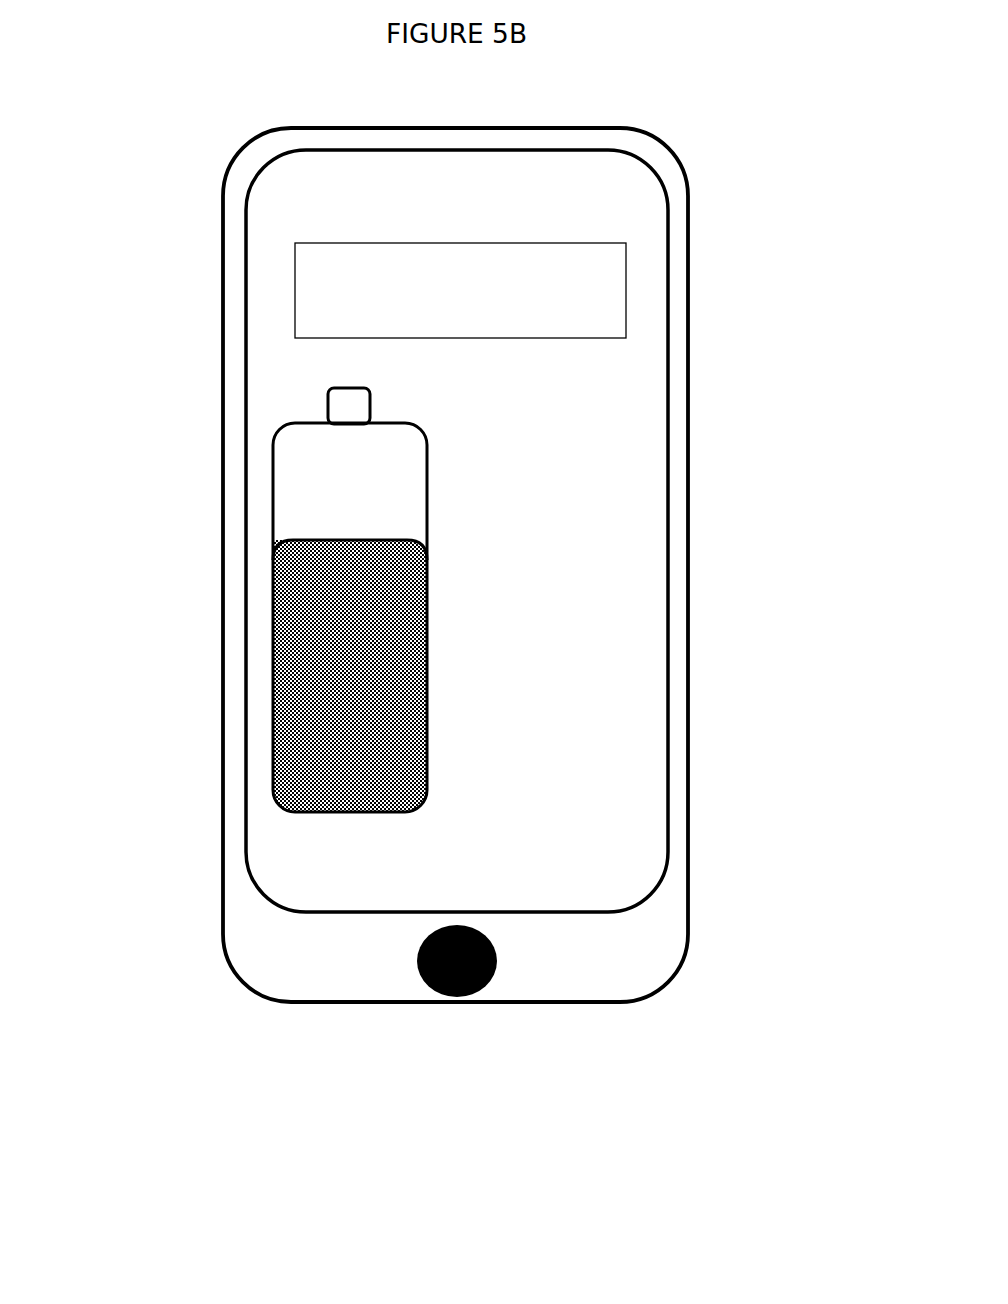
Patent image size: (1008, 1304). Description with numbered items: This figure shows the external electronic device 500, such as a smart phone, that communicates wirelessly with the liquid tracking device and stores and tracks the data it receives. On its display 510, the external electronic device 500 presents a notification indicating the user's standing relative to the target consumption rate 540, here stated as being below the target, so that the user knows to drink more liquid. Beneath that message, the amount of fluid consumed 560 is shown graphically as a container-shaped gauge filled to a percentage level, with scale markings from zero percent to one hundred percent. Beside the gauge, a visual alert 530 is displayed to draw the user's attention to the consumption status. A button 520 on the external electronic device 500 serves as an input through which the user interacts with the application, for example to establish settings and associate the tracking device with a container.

The external electronic device 500 is at (363, 978).
The display 510 is at (487, 210).
The button 520 is at (500, 977).
The visual alert 530 is at (660, 648).
The target consumption rate 540 is at (311, 293).
The amount of fluid consumed 560 is at (341, 648).